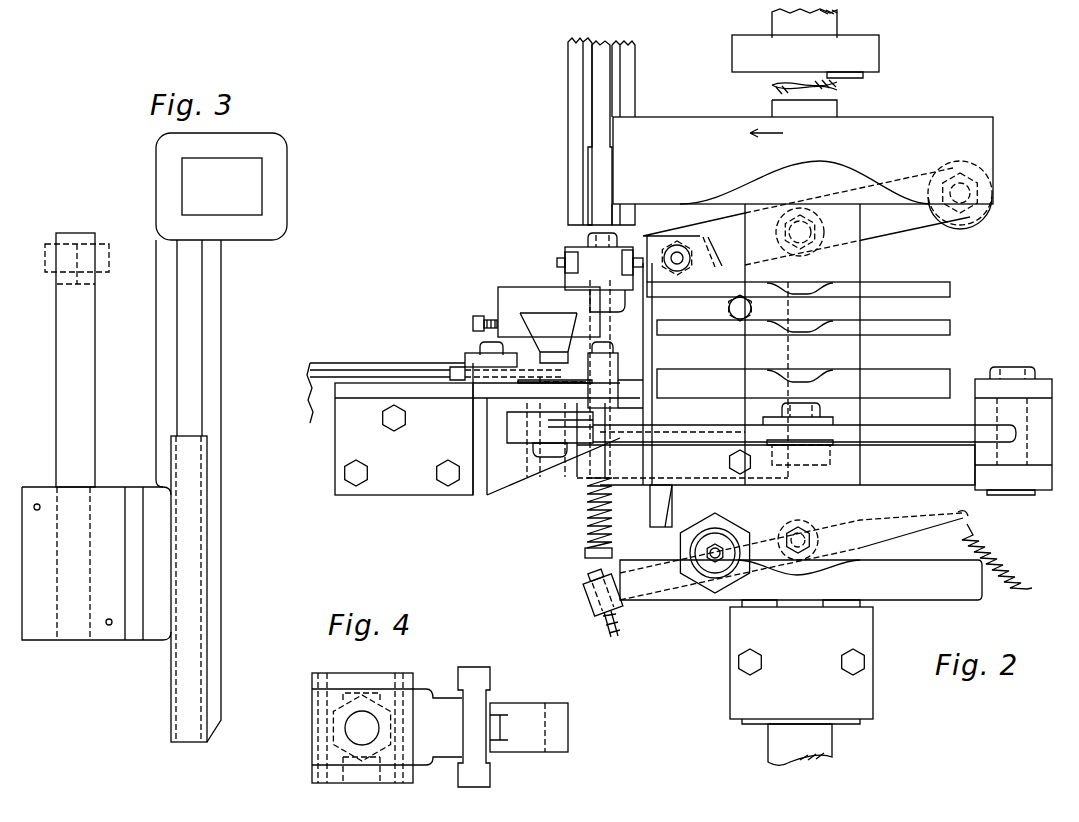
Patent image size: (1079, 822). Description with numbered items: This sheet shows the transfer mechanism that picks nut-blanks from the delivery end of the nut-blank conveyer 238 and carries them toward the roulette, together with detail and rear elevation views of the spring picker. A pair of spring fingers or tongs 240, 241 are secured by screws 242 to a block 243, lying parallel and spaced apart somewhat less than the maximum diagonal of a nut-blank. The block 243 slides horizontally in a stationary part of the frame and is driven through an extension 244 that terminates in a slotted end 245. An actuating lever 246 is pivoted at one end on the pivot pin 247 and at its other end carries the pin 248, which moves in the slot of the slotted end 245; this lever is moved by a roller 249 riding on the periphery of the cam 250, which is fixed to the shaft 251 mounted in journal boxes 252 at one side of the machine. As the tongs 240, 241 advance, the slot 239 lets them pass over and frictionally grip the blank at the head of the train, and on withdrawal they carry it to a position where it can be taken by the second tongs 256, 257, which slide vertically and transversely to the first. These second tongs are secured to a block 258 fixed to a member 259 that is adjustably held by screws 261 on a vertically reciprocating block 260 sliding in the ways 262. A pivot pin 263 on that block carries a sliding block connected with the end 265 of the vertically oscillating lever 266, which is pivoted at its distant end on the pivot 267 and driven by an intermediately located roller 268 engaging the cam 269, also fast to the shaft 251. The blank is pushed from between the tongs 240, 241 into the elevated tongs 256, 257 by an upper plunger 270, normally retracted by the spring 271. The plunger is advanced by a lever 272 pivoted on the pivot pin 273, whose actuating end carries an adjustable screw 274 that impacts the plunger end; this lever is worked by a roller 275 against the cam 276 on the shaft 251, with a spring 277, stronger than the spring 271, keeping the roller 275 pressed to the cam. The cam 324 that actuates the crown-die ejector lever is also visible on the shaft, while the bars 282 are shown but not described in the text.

In FIG. 2, the nut-blank conveyer 238 is at (572, 89).
In FIG. 2, the slot 239 is at (597, 198).
In FIG. 3, the spring finger 240 is at (96, 436).
In FIG. 4, the spring finger 240 is at (345, 693).
In FIG. 2, the spring finger 240 is at (598, 285).
In FIG. 4, the spring finger 241 is at (348, 770).
In FIG. 3, the screw 242 is at (76, 564).
In FIG. 4, the screw 242 is at (318, 686).
In FIG. 3, the block 243 is at (170, 589).
In FIG. 4, the block 243 is at (437, 727).
In FIG. 2, the block 243 is at (637, 400).
In FIG. 3, the extension 244 is at (193, 367).
In FIG. 4, the extension 244 is at (489, 722).
In FIG. 2, the extension 244 is at (668, 498).
In FIG. 3, the slotted end 245 is at (281, 209).
In FIG. 4, the slotted end 245 is at (545, 712).
In FIG. 2, the slotted end 245 is at (665, 233).
In FIG. 2, the actuating lever 246 is at (727, 236).
In FIG. 2, the pivot pin 247 is at (968, 207).
In FIG. 2, the pin 248 is at (688, 260).
In FIG. 2, the roller 249 is at (822, 233).
In FIG. 2, the cam 250 is at (862, 174).
In FIG. 2, the shaft 251 is at (805, 387).
In FIG. 2, the journal box 252 is at (801, 464).
In FIG. 2, the second tong 256 is at (637, 242).
In FIG. 2, the second tong 257 is at (567, 258).
In FIG. 2, the block 258 is at (575, 279).
In FIG. 2, the member 259 is at (549, 335).
In FIG. 2, the vertically reciprocating block 260 is at (569, 326).
In FIG. 2, the screw 261 is at (490, 318).
In FIG. 2, the ways 262 is at (480, 358).
In FIG. 2, the pivot pin 263 is at (552, 460).
In FIG. 2, the lever end 265 is at (517, 437).
In FIG. 2, the vertically oscillating lever 266 is at (724, 428).
In FIG. 2, the pivot 267 is at (1005, 392).
In FIG. 2, the roller 268 is at (828, 450).
In FIG. 2, the cam 269 is at (776, 465).
In FIG. 2, the upper plunger 270 is at (605, 314).
In FIG. 2, the spring 271 is at (588, 538).
In FIG. 2, the lever 272 is at (913, 522).
In FIG. 2, the pivot pin 273 is at (716, 547).
In FIG. 2, the adjustable screw 274 is at (612, 613).
In FIG. 2, the roller 275 is at (806, 514).
In FIG. 2, the cam 276 is at (840, 565).
In FIG. 2, the spring 277 is at (1006, 556).
In FIG. 2, the feed bars 282 is at (900, 375).
In FIG. 2, the cam 324 is at (891, 324).